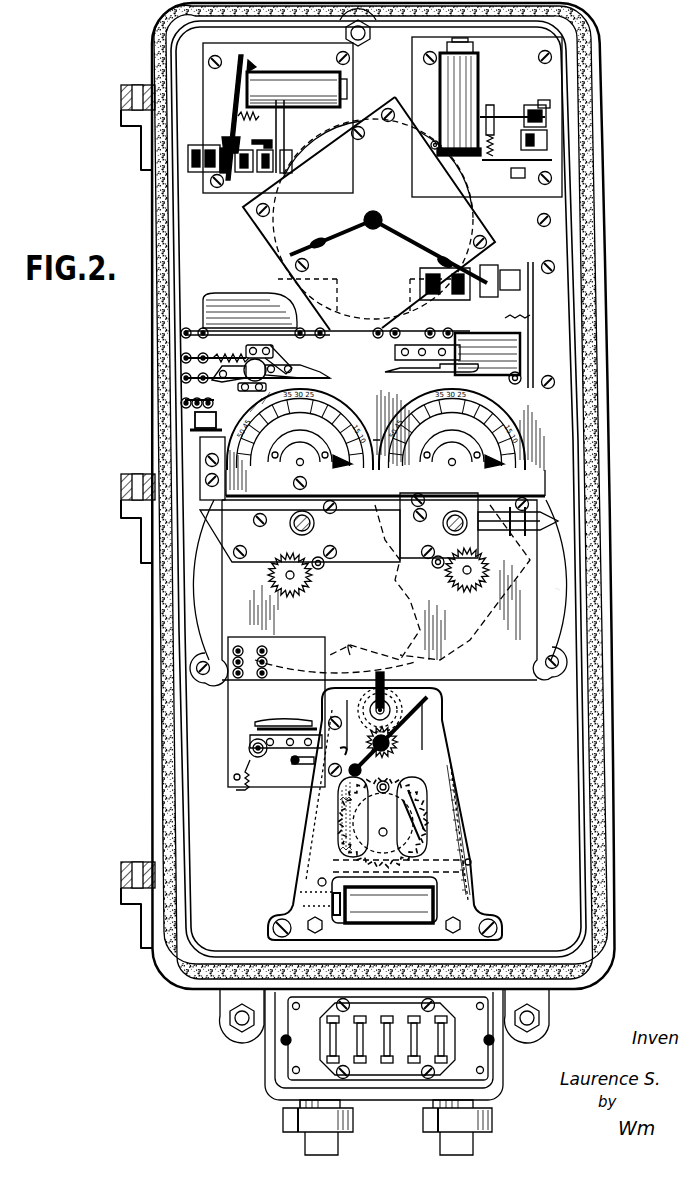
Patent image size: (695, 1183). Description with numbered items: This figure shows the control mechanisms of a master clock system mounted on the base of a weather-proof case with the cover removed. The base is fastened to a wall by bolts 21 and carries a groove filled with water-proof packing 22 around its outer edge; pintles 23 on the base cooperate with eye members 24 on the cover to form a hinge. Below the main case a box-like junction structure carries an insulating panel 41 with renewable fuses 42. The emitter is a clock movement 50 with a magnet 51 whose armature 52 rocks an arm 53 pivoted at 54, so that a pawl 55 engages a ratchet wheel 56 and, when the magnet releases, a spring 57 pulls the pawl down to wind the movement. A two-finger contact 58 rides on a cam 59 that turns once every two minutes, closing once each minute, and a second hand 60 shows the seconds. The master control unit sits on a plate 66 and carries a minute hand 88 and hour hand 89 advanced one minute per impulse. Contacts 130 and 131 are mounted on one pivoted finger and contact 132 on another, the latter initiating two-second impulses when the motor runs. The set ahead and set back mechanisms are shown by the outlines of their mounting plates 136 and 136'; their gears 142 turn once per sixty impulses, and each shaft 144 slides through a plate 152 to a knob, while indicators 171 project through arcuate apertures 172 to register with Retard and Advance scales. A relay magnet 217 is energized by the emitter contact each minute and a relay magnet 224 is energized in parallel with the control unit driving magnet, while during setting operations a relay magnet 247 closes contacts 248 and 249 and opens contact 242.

The bolts 21 is at (370, 44).
The water-proof packing 22 is at (592, 130).
The pintles 23 is at (132, 85).
The eye members 24 is at (121, 100).
The insulating panel 41 is at (445, 1068).
The renewable fuses 42 is at (410, 1045).
The clock movement 50 is at (415, 828).
The magnet 51 is at (407, 907).
The armature 52 is at (338, 915).
The arm 53 is at (325, 858).
The pivot 54 is at (318, 882).
The pawl 55 is at (420, 815).
The ratchet wheel 56 is at (425, 838).
The spring 57 is at (470, 903).
The contact 58 is at (303, 718).
The cam 59 is at (342, 752).
The second hand 60 is at (400, 718).
The plate 66 is at (262, 228).
The minute hand 88 is at (425, 252).
The hour hand 89 is at (330, 238).
The contact 130 is at (322, 350).
The contact 131 is at (203, 398).
The contact 132 is at (416, 338).
The mounting plate 136 is at (615, 593).
The mounting plate 136' is at (335, 663).
The gears 142 is at (312, 580).
The shaft 144 is at (296, 530).
The plate 152 is at (408, 560).
The indicators 171 is at (362, 472).
The arcuate apertures 172 is at (318, 433).
The relay magnet 217 is at (470, 88).
The relay magnet 224 is at (505, 340).
The contact 242 is at (205, 177).
The relay magnet 247 is at (297, 89).
The contact 248 is at (236, 178).
The contact 249 is at (230, 137).